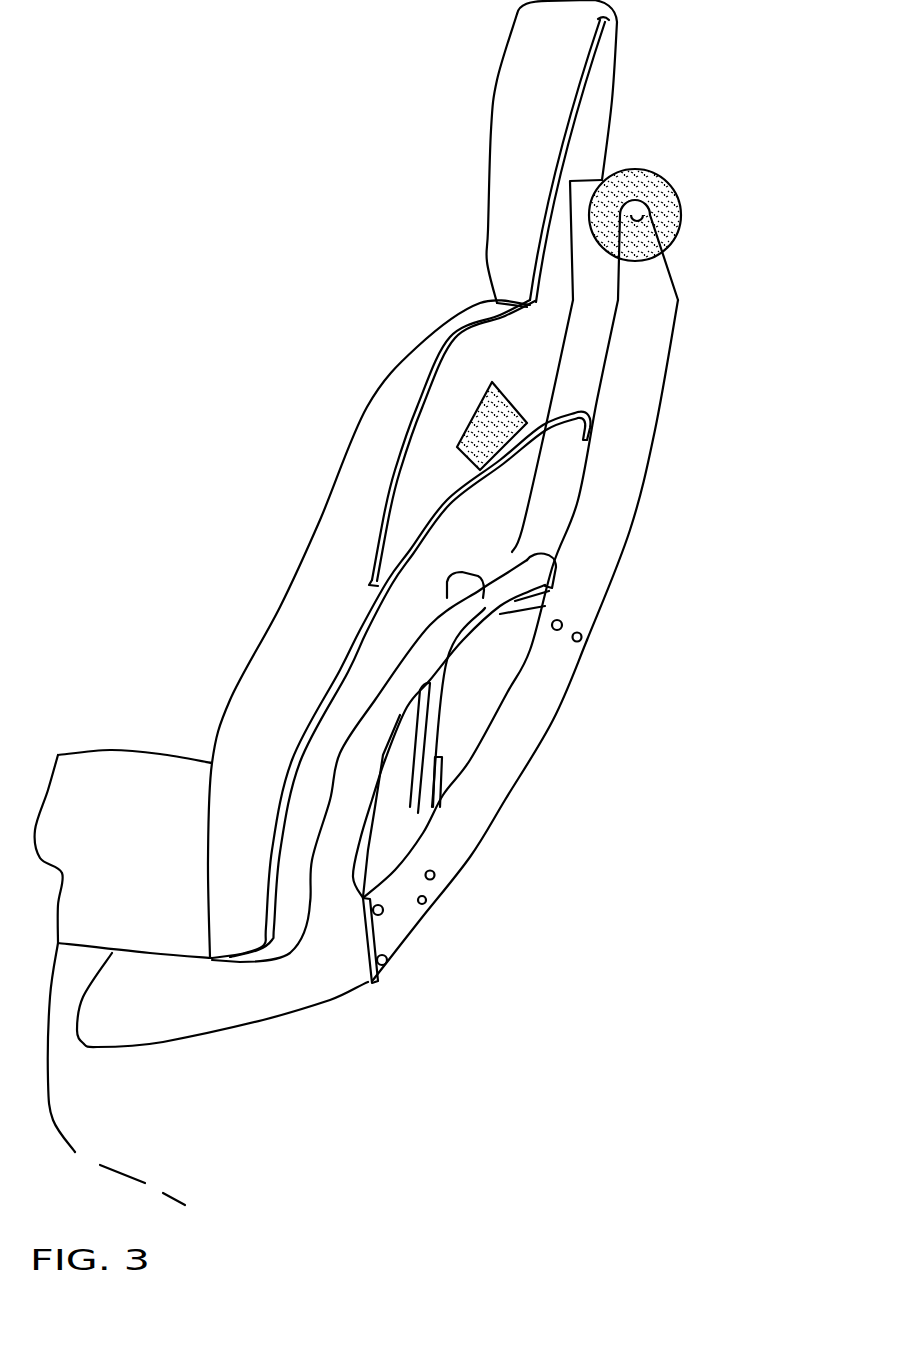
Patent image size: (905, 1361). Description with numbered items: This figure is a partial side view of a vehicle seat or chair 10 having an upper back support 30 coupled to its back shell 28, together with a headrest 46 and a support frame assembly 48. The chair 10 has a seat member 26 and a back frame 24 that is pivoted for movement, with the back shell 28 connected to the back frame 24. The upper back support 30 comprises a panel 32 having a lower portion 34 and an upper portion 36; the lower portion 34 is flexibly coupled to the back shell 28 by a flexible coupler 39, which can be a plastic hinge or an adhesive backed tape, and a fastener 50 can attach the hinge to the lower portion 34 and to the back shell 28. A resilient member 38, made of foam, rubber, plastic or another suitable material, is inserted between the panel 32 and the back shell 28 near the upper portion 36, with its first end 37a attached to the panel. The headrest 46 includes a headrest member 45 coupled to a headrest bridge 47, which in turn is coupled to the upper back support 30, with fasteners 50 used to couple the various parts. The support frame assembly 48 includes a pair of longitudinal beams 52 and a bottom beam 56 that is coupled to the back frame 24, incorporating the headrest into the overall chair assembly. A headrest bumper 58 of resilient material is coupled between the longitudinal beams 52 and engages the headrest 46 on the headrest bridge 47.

The chair 10 is at (305, 310).
The back frame 24 is at (350, 812).
The seat member 26 is at (112, 770).
The back shell 28 is at (550, 460).
The upper back support 30 is at (437, 407).
The panel 32 is at (423, 478).
The lower portion 34 is at (360, 557).
The upper portion 36 is at (493, 338).
The first end 37a is at (476, 380).
The resilient member 38 is at (547, 420).
The flexible coupler 39 is at (355, 597).
The headrest member 45 is at (598, 115).
The headrest 46 is at (522, 32).
The headrest bridge 47 is at (560, 297).
The support frame assembly 48 is at (537, 703).
The fastener 50 is at (583, 640).
The longitudinal beam 52 is at (607, 548).
The bottom beam 56 is at (395, 932).
The headrest bumper 58 is at (680, 190).